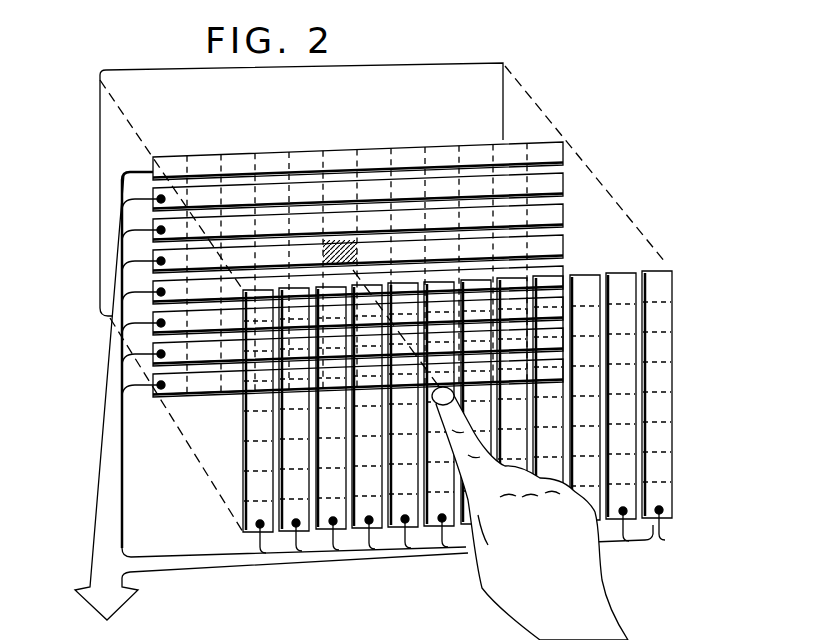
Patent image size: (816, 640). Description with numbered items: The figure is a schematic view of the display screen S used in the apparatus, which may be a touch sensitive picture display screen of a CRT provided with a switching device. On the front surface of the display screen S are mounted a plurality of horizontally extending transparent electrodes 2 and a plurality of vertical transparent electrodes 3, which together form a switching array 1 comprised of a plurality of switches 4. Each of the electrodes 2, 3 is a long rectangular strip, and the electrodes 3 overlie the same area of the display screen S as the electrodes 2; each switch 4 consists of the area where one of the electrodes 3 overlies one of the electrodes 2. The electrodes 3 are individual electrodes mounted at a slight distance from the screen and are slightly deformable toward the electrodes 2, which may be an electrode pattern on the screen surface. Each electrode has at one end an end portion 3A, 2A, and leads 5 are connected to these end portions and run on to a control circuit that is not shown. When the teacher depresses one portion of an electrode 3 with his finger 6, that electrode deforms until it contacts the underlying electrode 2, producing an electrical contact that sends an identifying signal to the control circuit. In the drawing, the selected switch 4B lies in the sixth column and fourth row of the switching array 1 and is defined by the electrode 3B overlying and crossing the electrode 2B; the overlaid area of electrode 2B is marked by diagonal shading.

The switching array 1 is at (657, 220).
The display screen S is at (486, 82).
The horizontally extending transparent electrodes 2 is at (556, 182).
The end portion 2A is at (167, 168).
The electrode 2B is at (564, 245).
The vertical transparent electrodes 3 is at (630, 278).
The end portion 3A is at (246, 540).
The electrode 3B is at (442, 282).
The switches 4 is at (712, 424).
The selected switch 4B is at (399, 400).
The leads 5 is at (122, 172).
The finger 6 is at (487, 434).